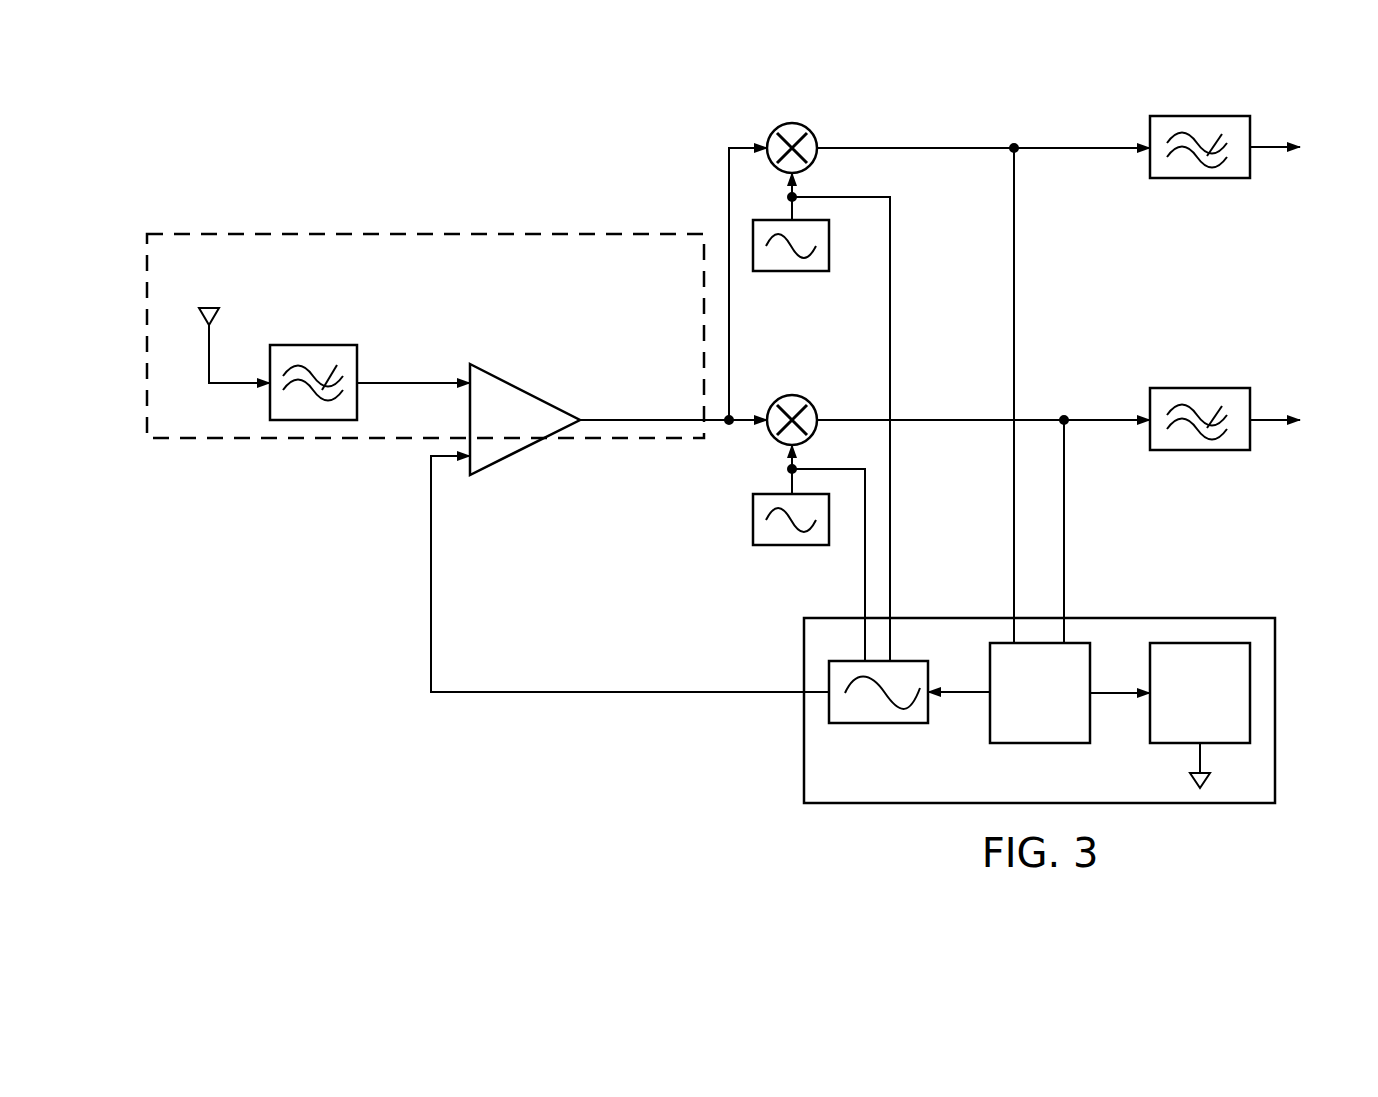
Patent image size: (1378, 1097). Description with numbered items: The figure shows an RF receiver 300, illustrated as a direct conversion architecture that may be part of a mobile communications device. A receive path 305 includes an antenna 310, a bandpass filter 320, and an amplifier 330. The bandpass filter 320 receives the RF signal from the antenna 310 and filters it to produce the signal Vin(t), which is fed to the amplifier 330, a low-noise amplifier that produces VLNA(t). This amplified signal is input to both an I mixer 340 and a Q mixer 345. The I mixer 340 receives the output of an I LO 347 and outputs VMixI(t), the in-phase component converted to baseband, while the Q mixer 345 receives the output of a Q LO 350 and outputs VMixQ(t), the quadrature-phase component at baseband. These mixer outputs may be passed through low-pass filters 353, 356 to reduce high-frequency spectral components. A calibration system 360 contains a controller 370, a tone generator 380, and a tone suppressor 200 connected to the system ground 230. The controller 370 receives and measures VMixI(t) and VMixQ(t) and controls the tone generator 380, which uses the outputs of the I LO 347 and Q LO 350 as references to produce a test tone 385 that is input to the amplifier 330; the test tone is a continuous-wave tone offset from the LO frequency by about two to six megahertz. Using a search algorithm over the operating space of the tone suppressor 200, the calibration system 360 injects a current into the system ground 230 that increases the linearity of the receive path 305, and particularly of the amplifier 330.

The RF receiver 300 is at (420, 117).
The receive path 305 is at (333, 233).
The antenna 310 is at (209, 307).
The bandpass filter 320 is at (313, 345).
The amplifier 330 is at (525, 393).
The I mixer 340 is at (800, 123).
The Q mixer 345 is at (800, 395).
The I LO 347 is at (780, 271).
The Q LO 350 is at (806, 545).
The low-pass filter 353 is at (1200, 116).
The low-pass filter 356 is at (1200, 388).
The calibration system 360 is at (1278, 733).
The controller 370 is at (1039, 693).
The tone generator 380 is at (889, 723).
The tone suppressor 200 is at (1200, 693).
The system ground 230 is at (1190, 785).
The test tone 385 is at (430, 563).